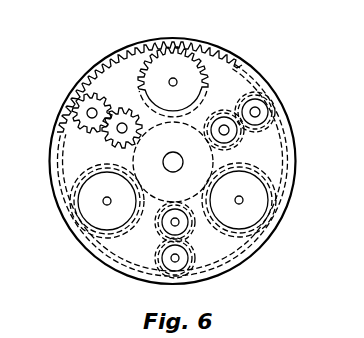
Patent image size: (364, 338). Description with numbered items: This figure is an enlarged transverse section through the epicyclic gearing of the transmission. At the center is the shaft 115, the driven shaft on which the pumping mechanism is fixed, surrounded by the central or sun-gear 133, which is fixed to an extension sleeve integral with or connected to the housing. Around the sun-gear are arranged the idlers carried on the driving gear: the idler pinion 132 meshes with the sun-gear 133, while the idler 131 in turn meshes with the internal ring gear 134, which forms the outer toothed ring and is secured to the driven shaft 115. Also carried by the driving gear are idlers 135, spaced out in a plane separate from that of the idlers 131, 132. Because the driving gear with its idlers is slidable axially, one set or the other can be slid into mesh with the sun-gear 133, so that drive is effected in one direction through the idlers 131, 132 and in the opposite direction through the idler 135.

The internal ring gear 134 is at (212, 44).
The idler 135 is at (166, 59).
The idler 131 is at (92, 113).
The idler pinion 132 is at (240, 142).
The sun-gear 133 is at (173, 162).
The shaft 115 is at (172, 167).